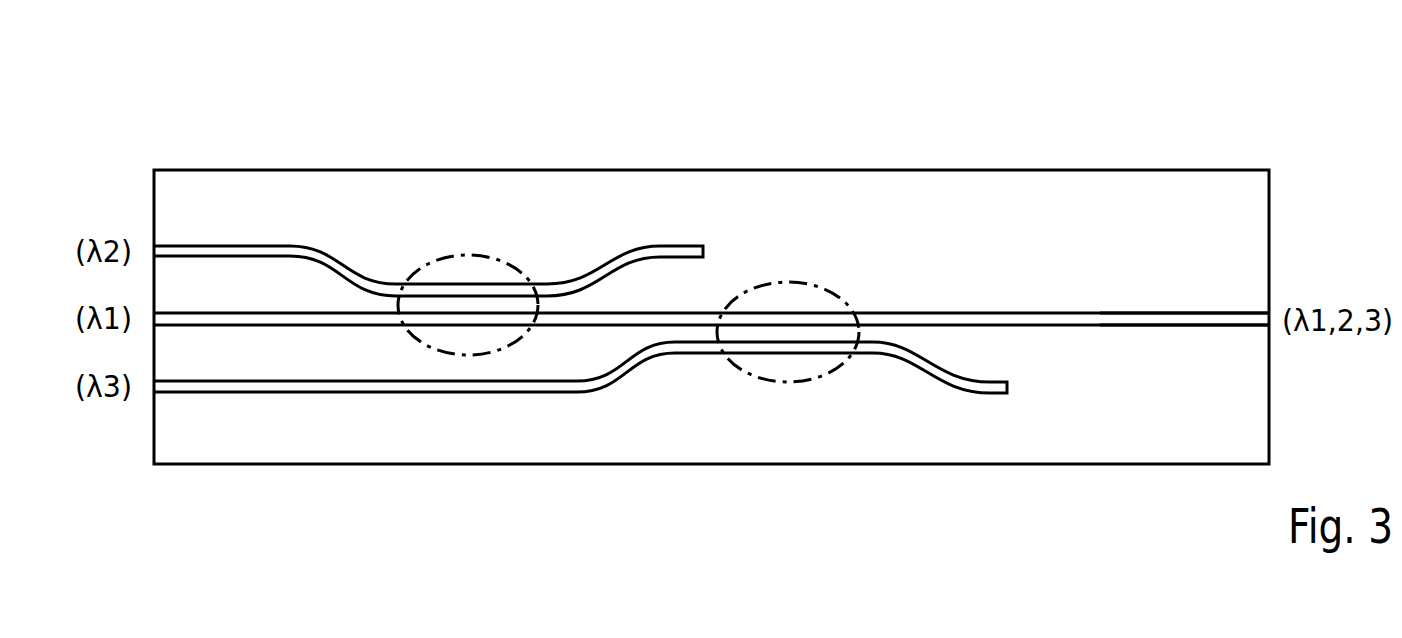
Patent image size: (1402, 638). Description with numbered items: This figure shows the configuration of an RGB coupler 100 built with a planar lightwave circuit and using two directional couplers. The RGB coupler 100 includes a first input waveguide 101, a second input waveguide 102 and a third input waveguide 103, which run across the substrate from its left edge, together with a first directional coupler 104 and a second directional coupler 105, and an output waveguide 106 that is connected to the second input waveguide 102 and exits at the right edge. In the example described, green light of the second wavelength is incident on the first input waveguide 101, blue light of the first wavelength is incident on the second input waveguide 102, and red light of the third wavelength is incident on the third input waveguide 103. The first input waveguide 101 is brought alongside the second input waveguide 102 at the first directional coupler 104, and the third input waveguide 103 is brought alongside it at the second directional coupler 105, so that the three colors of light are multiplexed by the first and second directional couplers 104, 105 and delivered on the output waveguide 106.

The RGB coupler 100 is at (810, 160).
The first input waveguide 101 is at (232, 247).
The second input waveguide 102 is at (278, 312).
The third input waveguide 103 is at (250, 388).
The first directional coupler 104 is at (466, 257).
The second directional coupler 105 is at (787, 383).
The output waveguide 106 is at (1141, 322).